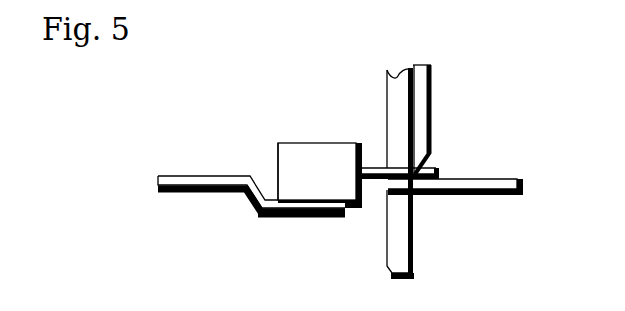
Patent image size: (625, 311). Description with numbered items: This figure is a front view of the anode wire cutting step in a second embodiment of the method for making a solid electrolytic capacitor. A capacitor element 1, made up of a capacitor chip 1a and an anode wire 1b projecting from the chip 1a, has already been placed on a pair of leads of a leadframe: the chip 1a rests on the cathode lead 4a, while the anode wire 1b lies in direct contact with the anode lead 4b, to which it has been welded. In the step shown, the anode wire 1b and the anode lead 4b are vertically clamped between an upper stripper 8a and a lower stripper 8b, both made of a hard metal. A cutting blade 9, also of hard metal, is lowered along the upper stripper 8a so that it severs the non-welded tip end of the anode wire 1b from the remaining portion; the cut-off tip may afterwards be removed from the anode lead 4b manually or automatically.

The capacitor element 1 is at (323, 142).
The capacitor chip 1a is at (290, 153).
The anode wire 1b is at (375, 166).
The cathode lead 4a is at (193, 183).
The anode lead 4b is at (480, 182).
The upper stripper 8a is at (398, 86).
The lower stripper 8b is at (392, 228).
The cutting blade 9 is at (426, 88).